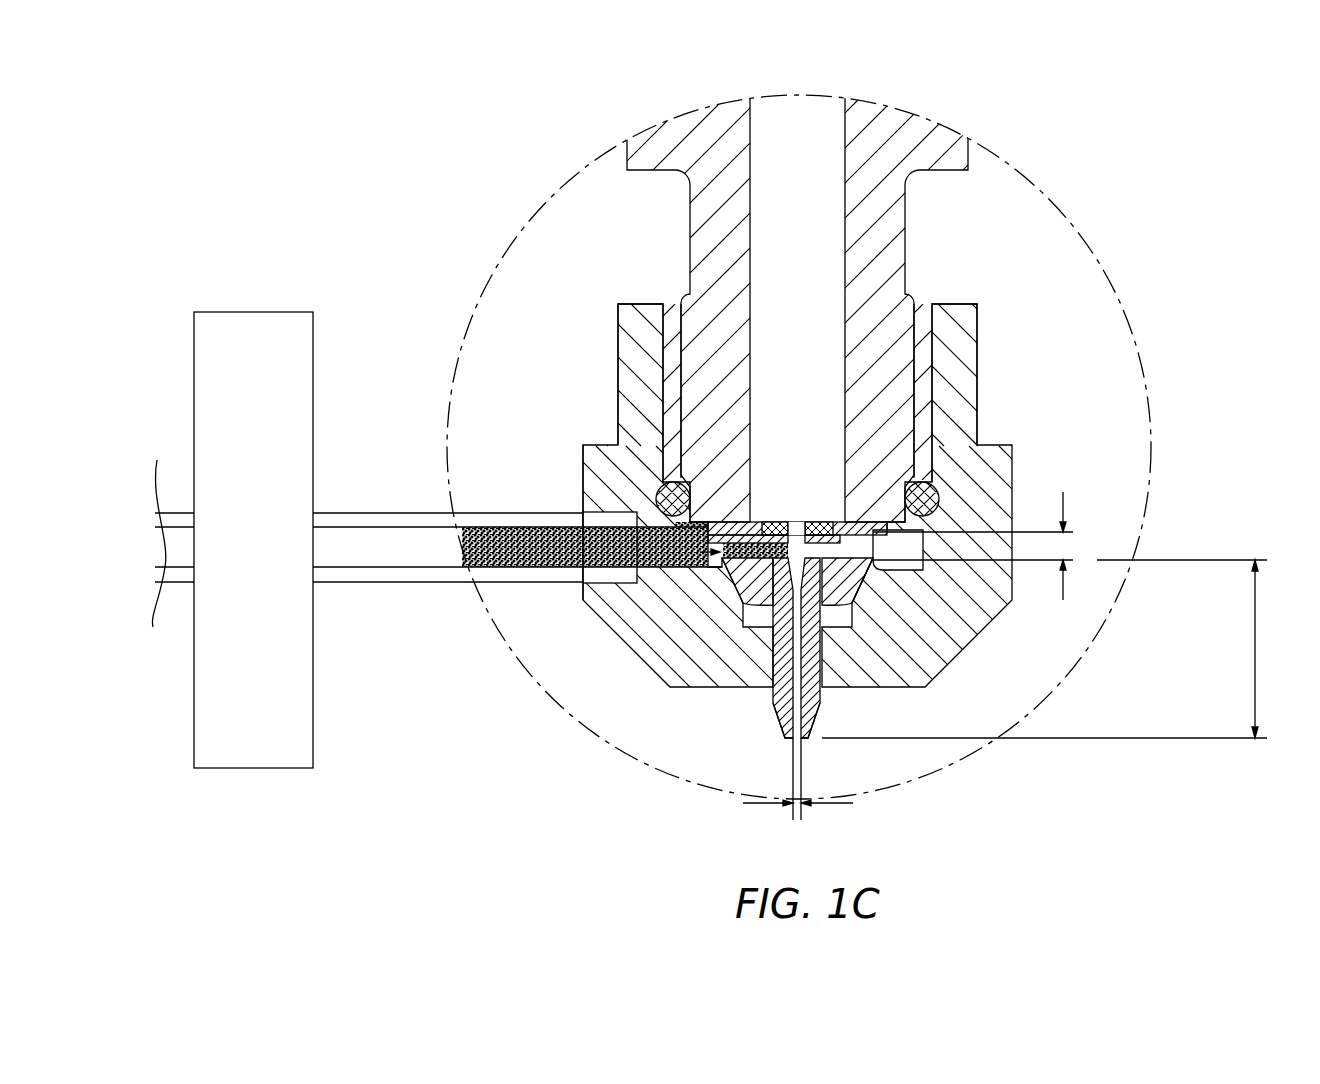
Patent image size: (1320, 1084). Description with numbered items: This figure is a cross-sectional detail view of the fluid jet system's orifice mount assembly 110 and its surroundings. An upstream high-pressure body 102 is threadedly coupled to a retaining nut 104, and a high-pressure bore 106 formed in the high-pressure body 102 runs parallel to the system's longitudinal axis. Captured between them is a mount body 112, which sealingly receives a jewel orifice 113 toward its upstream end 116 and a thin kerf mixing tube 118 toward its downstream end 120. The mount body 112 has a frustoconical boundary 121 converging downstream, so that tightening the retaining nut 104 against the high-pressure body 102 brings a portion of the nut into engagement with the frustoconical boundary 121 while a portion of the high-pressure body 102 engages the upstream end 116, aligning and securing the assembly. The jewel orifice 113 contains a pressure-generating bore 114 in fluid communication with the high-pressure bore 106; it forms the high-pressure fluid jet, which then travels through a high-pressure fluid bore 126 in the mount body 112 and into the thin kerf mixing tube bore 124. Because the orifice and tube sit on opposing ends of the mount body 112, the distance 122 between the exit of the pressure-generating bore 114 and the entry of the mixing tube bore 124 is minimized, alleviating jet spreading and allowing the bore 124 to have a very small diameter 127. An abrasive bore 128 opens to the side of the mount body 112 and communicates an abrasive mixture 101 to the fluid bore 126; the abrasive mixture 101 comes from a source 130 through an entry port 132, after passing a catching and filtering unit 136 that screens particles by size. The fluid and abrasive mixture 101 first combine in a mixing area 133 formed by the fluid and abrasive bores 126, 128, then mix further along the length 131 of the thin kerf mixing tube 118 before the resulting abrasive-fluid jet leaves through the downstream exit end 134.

The abrasive mixture 101 is at (575, 520).
The upstream high-pressure body 102 is at (914, 235).
The retaining nut 104 is at (978, 365).
The high-pressure bore 106 is at (818, 110).
The orifice mount assembly 110 is at (756, 735).
The mount body 112 is at (837, 640).
The jewel orifice 113 is at (812, 522).
The pressure-generating bore 114 is at (797, 508).
The upstream end 116 is at (758, 516).
The thin kerf mixing tube 118 is at (772, 697).
The downstream end 120 is at (773, 650).
The frustoconical boundary 121 is at (880, 600).
The distance 122 is at (1063, 492).
The thin kerf mixing tube bore 124 is at (806, 682).
The high-pressure fluid bore 126 is at (752, 622).
The diameter 127 is at (778, 806).
The abrasive bore 128 is at (583, 456).
The source 130 is at (488, 513).
The length 131 is at (1049, 649).
The entry port 132 is at (668, 550).
The mixing area 133 is at (856, 506).
The downstream exit end 134 is at (806, 738).
The catching and filtering unit 136 is at (273, 312).